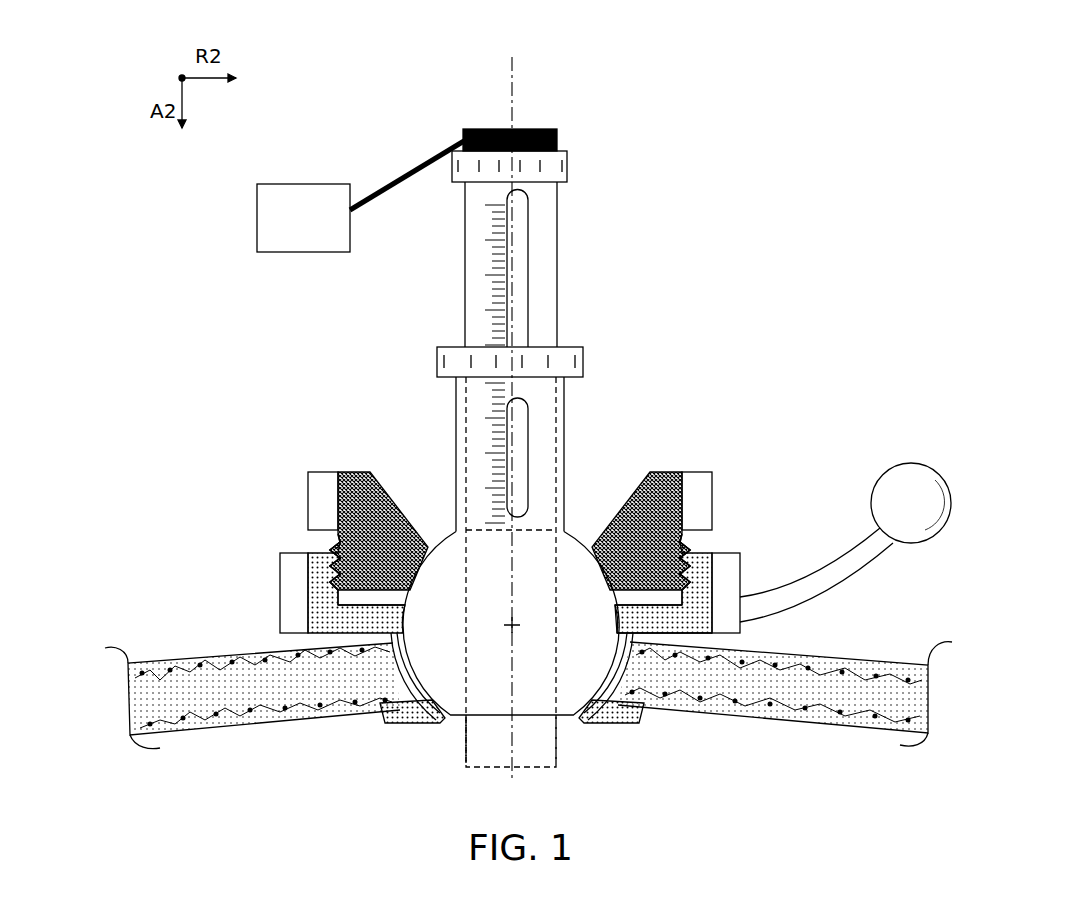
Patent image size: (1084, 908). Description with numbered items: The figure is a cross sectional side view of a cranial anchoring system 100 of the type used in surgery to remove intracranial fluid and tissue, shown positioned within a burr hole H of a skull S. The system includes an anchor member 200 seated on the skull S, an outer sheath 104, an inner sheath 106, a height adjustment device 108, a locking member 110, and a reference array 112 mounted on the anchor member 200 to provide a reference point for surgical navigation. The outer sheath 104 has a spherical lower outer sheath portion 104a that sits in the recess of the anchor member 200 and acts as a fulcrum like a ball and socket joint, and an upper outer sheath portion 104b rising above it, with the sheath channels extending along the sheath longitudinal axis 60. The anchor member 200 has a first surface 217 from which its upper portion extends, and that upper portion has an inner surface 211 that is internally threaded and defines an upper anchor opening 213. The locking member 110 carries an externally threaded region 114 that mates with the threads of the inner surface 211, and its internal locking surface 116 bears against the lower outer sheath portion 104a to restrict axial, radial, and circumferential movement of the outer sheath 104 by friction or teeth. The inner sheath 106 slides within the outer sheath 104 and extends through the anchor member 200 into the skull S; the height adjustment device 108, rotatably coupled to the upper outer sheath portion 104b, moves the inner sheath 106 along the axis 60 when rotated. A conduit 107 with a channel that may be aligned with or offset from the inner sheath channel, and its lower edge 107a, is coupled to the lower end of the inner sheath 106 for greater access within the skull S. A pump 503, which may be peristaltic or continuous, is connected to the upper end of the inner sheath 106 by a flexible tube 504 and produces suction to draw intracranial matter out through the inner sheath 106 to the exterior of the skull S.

The cranial anchoring system 100 is at (728, 318).
The sheath longitudinal axis 60 is at (510, 124).
The flexible tube 504 is at (452, 154).
The pump 503 is at (257, 220).
The inner sheath 106 is at (467, 262).
The height adjustment device 108 is at (437, 362).
The outer sheath 104 is at (449, 550).
The upper outer sheath portion 104b is at (578, 441).
The lower outer sheath portion 104a is at (578, 531).
The conduit 107 is at (561, 745).
The tip edge 107a is at (484, 756).
The locking member 110 is at (330, 498).
The internal locking surface 116 is at (383, 500).
The threaded region 114 is at (336, 541).
The anchor member 200 is at (302, 586).
The inner surface 211 is at (336, 597).
The upper anchor opening 213 is at (345, 601).
The first surface 217 is at (652, 605).
The reference array 112 is at (911, 463).
The skull S is at (128, 710).
The burr hole H is at (387, 679).